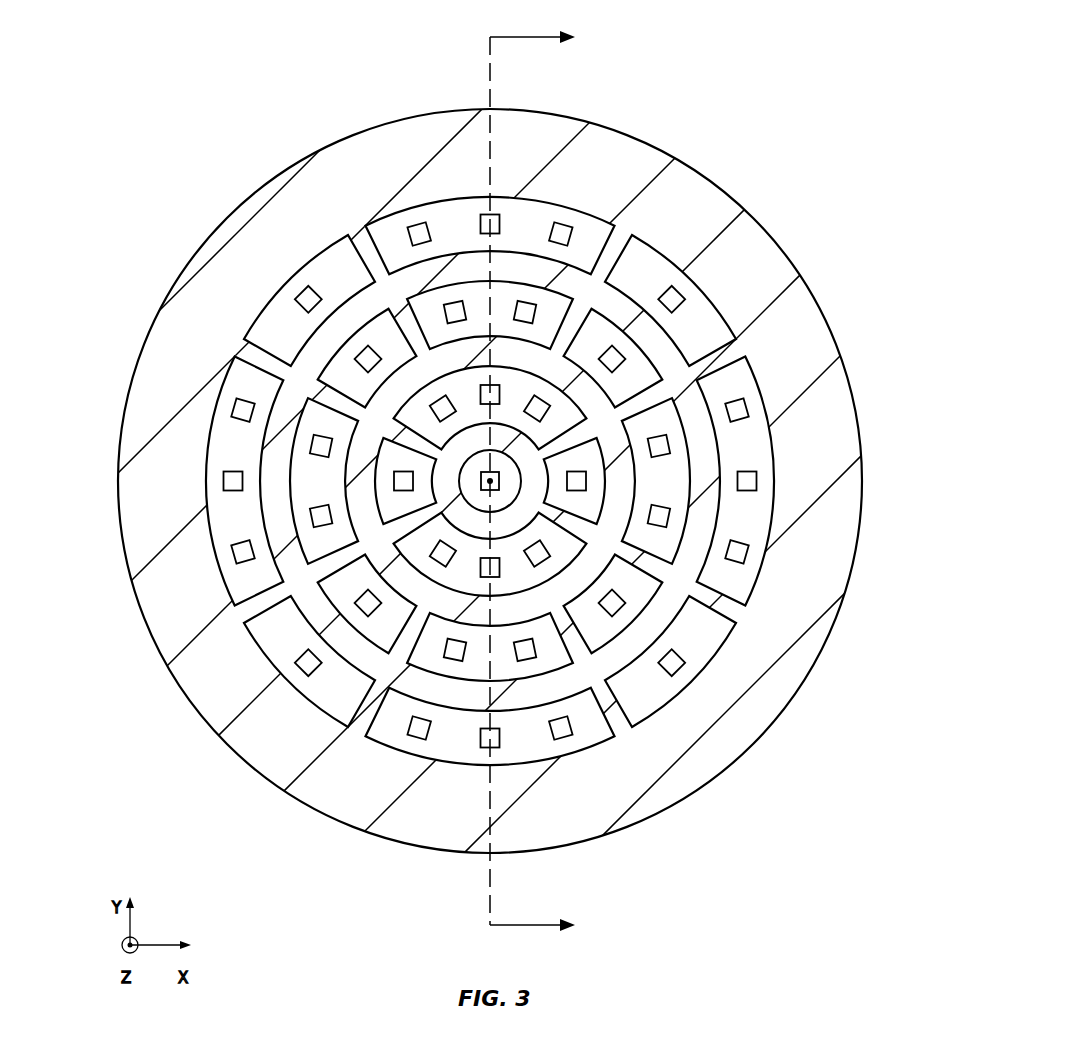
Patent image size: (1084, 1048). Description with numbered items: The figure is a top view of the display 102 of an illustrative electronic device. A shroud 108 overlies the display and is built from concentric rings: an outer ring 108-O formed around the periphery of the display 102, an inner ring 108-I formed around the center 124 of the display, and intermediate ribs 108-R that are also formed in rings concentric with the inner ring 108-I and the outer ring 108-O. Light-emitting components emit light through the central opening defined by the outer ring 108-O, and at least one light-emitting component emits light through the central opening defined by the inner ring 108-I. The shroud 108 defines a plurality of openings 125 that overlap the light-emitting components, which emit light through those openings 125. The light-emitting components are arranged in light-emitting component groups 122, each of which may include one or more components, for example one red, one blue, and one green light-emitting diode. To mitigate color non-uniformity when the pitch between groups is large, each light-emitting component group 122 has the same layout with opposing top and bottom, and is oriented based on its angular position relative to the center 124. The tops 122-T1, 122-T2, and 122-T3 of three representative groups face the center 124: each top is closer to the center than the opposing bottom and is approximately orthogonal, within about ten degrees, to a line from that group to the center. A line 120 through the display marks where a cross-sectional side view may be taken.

The display 102 is at (725, 78).
The shroud 108 is at (330, 172).
The outer ring 108-O is at (795, 590).
The intermediate ribs 108-R is at (617, 497).
The inner ring 108-I is at (538, 476).
The line 120 is at (489, 79).
The light-emitting component groups 122 is at (573, 235).
The top of light-emitting component group 122-T1 is at (413, 727).
The top of light-emitting component group 122-T2 is at (330, 458).
The top of light-emitting component group 122-T3 is at (500, 238).
The center 124 is at (497, 477).
The openings 125 is at (600, 743).